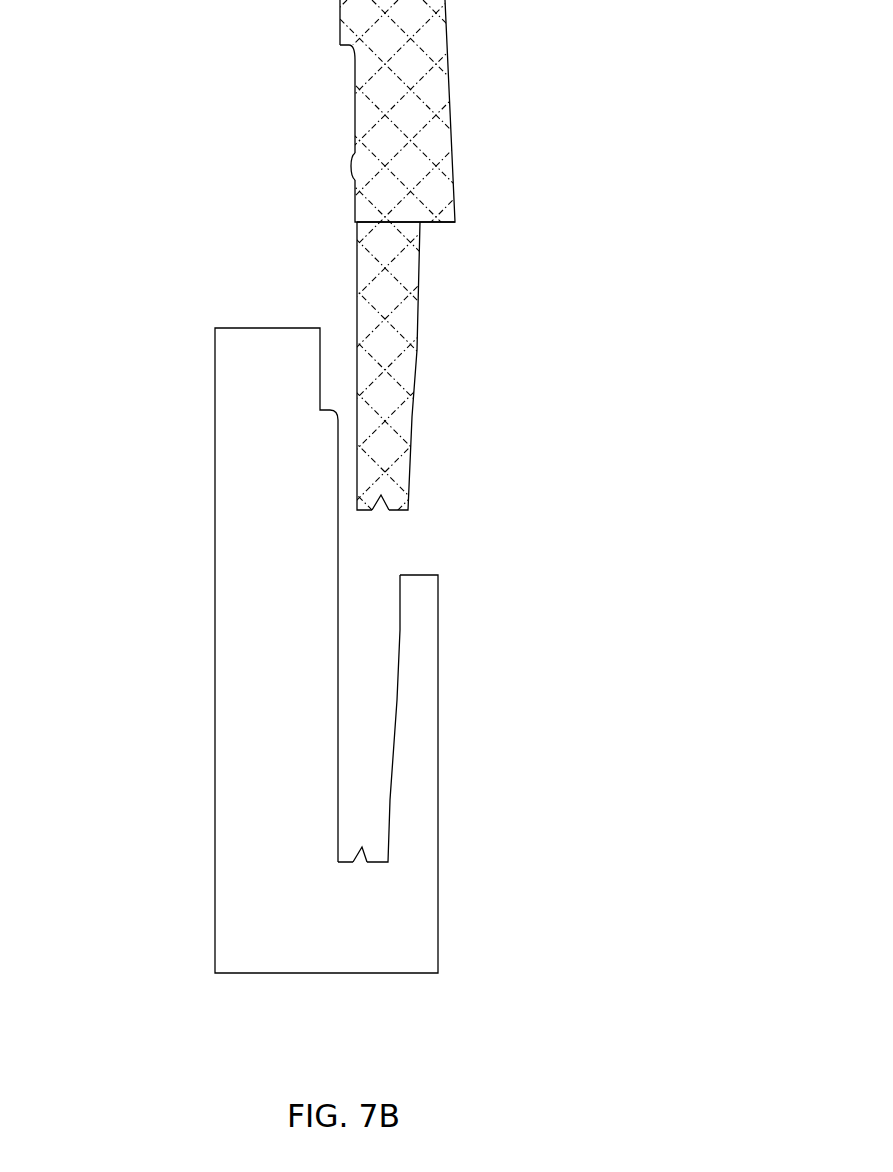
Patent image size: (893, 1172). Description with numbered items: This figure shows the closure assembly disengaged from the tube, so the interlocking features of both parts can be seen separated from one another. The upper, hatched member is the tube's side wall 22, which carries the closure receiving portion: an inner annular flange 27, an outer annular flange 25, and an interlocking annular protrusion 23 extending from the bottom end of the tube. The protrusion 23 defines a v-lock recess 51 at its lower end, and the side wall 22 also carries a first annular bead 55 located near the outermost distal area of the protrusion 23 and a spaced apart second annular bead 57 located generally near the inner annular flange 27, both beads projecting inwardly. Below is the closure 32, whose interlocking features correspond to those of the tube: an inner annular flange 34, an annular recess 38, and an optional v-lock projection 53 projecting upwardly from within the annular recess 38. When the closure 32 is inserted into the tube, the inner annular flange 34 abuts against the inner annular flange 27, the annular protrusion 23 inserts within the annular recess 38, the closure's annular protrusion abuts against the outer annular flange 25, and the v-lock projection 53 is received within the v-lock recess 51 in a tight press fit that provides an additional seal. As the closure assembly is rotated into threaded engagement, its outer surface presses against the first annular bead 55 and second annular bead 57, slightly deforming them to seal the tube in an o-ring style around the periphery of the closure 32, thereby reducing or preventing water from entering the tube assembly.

The side wall 22 is at (446, 260).
The interlocking annular protrusion 23 is at (446, 269).
The outer annular flange 25 is at (452, 212).
The inner annular flange 27 is at (340, 45).
The closure 32 is at (290, 650).
The inner annular flange 34 is at (250, 585).
The annular recess 38 is at (382, 729).
The v-lock recess 51 is at (380, 512).
The v-lock projection 53 is at (364, 852).
The first annular bead 55 is at (355, 475).
The second annular bead 57 is at (355, 162).